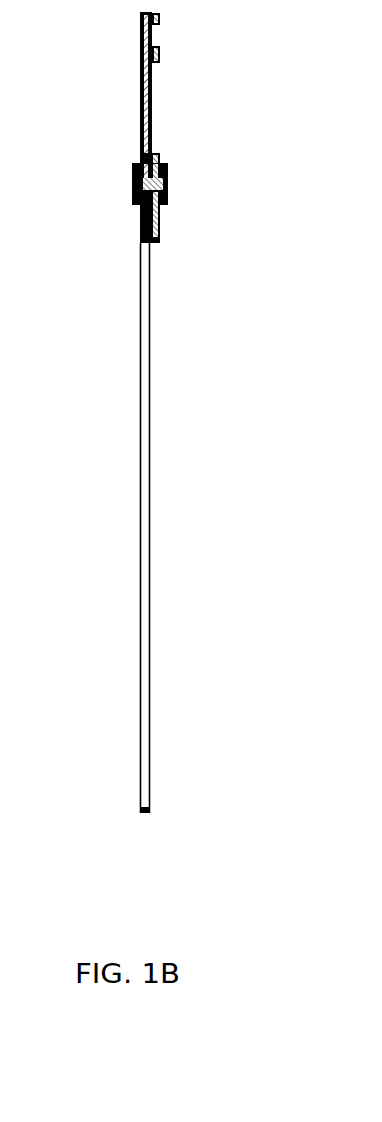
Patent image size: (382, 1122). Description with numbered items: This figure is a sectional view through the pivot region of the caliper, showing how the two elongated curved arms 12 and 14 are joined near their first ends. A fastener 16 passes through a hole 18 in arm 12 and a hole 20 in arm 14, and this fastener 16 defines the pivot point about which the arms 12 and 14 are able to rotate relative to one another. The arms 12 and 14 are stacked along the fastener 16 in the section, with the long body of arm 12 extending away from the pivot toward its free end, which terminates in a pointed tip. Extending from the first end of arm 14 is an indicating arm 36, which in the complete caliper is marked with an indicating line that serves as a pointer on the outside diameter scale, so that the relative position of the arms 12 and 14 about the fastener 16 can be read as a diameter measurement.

The curved arm 12 is at (216, 528).
The curved arm 14 is at (192, 234).
The fastener 16 is at (103, 172).
The hole 18 is at (110, 222).
The hole 20 is at (201, 88).
The indicating arm 36 is at (202, 38).